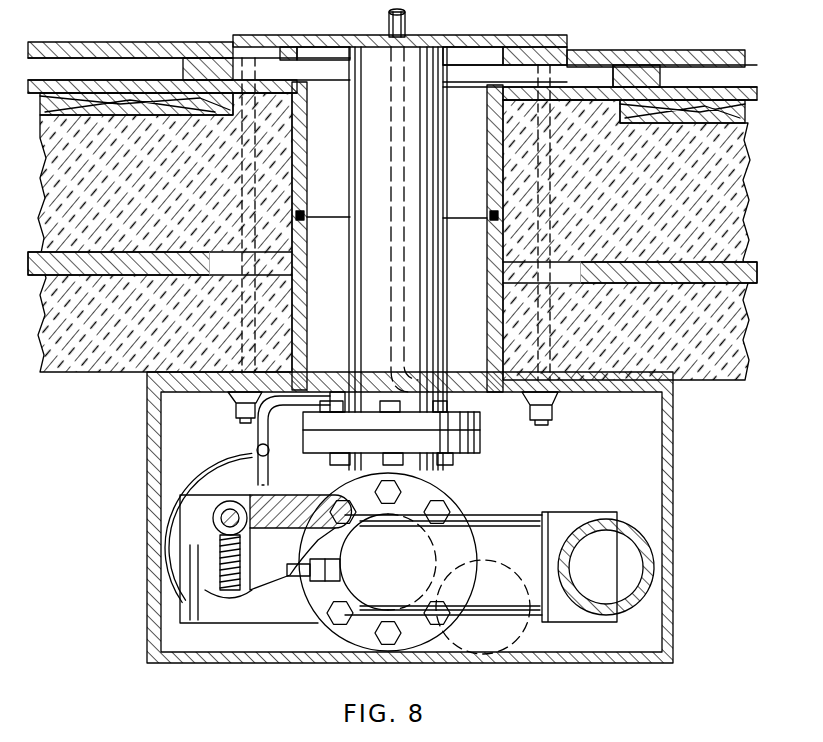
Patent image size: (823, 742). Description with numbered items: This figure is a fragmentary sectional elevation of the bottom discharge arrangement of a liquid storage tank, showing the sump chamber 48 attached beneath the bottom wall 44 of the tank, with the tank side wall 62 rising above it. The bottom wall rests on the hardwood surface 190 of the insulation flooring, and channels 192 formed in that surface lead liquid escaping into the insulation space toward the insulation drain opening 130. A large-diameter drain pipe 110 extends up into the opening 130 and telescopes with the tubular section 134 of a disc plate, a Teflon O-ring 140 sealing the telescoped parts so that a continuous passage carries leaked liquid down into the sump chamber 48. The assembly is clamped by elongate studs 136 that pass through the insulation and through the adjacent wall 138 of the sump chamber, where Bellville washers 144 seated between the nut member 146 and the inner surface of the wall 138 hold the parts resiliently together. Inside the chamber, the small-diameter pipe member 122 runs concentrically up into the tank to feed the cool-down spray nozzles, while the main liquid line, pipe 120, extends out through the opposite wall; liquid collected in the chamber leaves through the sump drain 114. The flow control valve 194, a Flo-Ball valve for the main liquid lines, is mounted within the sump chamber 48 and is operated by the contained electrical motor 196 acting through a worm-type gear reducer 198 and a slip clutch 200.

The bottom wall 44 is at (125, 42).
The sump chamber 48 is at (138, 454).
The side wall 62 is at (540, 38).
The drain pipe 110 is at (487, 330).
The sump drain 114 is at (540, 655).
The pipe 120 is at (640, 530).
The pipe member 122 is at (406, 20).
The opening 130 is at (346, 113).
The tubular section 134 is at (487, 178).
The studs 136 is at (242, 190).
The wall 138 is at (645, 398).
The O-ring 140 is at (305, 215).
The Bellville washers 144 is at (558, 398).
The nut member 146 is at (553, 416).
The hardwood surface 190 is at (654, 118).
The channels 192 is at (140, 68).
The flow control valve 194 is at (455, 505).
The motor 196 is at (170, 493).
The gear reducer 198 is at (245, 518).
The slip clutch 200 is at (225, 537).